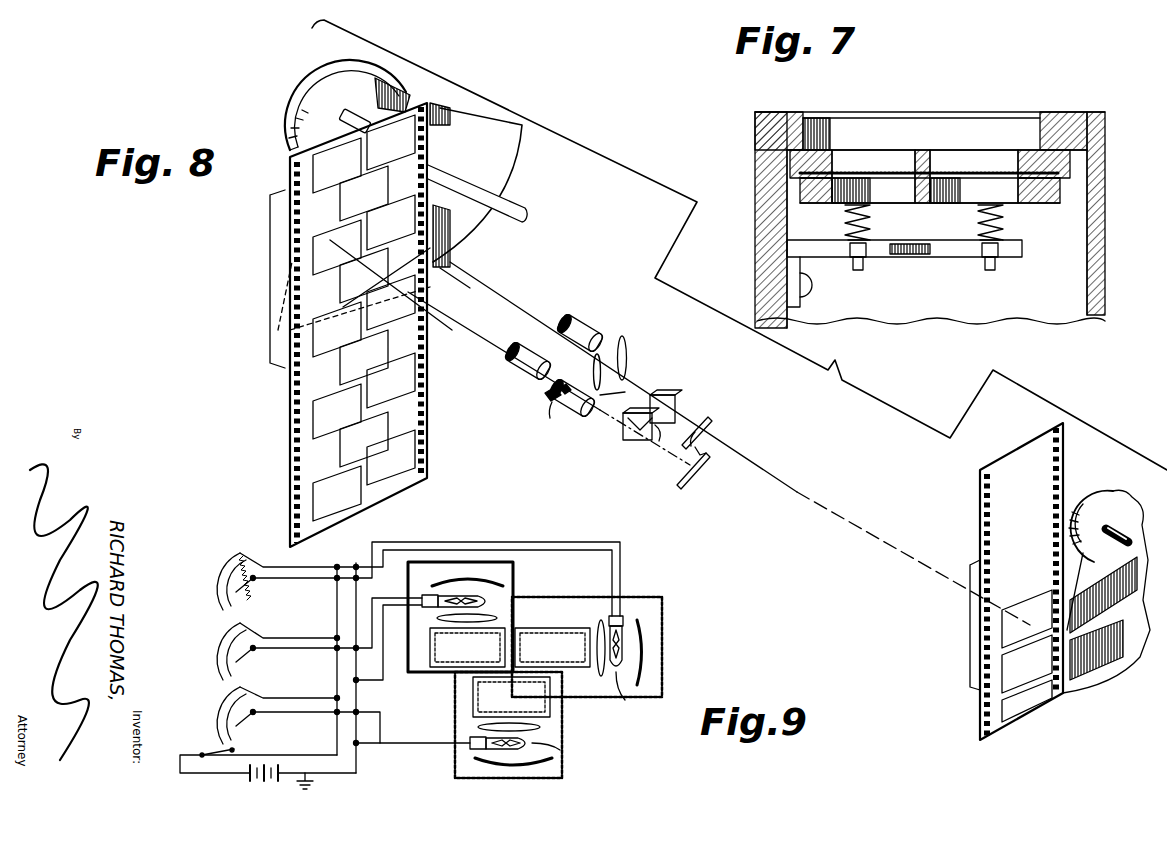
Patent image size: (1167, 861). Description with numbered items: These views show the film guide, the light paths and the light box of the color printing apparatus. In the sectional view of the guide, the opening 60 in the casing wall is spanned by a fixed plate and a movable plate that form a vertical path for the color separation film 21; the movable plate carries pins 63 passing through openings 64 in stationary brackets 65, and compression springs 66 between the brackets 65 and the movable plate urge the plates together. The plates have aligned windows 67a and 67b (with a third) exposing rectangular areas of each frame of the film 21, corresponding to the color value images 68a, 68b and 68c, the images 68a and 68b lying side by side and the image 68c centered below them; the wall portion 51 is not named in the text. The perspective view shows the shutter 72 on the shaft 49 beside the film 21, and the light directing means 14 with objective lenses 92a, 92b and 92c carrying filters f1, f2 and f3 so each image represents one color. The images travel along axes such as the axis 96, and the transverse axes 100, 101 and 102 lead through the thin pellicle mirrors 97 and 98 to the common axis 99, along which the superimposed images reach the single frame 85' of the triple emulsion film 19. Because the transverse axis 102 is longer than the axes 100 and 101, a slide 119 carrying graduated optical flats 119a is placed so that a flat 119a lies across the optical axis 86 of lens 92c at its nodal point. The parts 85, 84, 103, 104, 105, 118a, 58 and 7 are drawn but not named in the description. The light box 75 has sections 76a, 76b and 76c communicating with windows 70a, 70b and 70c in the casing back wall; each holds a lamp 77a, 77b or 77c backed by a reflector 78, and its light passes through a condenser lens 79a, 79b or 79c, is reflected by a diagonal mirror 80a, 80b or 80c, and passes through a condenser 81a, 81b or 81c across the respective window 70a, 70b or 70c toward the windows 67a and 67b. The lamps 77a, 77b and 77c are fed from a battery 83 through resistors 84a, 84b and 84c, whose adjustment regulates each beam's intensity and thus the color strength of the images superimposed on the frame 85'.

In FIG. 7, the housing wall 51 is at (777, 118).
In FIG. 7, the opening 60 is at (834, 129).
In FIG. 7, the window 67b is at (875, 154).
In FIG. 7, the window 67a is at (980, 154).
In FIG. 7, the stationary bracket 65 is at (805, 246).
In FIG. 7, the compression spring 66 is at (871, 234).
In FIG. 7, the pin 63 is at (862, 269).
In FIG. 7, the opening 64 is at (845, 255).
In FIG. 8, the color separation film 21 is at (404, 102).
In FIG. 8, the shutter 72 is at (475, 122).
In FIG. 8, the shaft 49 is at (500, 190).
In FIG. 8, the color value image 68a is at (318, 257).
In FIG. 8, the color value image 68b is at (417, 192).
In FIG. 8, the color value image 68c is at (347, 292).
In FIG. 8, the light beam 85 is at (623, 377).
In FIG. 8, the axis 99 is at (802, 490).
In FIG. 8, the lamp axis 84 is at (486, 335).
In FIG. 8, the optical axis 86 is at (480, 353).
In FIG. 8, the objective lens 92a is at (525, 373).
In FIG. 8, the objective lens 92b is at (590, 328).
In FIG. 8, the objective lens 92c is at (584, 411).
In FIG. 8, the filter f1 is at (510, 356).
In FIG. 8, the filter f2 is at (570, 320).
In FIG. 8, the filter f3 is at (548, 388).
In FIG. 8, the slide 119 is at (548, 402).
In FIG. 8, the optical flat 119a is at (554, 420).
In FIG. 8, the lamp mount 118a is at (572, 410).
In FIG. 8, the transverse axis 100 is at (594, 362).
In FIG. 8, the lens 103 is at (628, 372).
In FIG. 8, the light directing means 14 is at (620, 334).
In FIG. 8, the axis 96 is at (620, 392).
In FIG. 8, the mirror 97 is at (677, 402).
In FIG. 8, the prism 104 is at (630, 442).
In FIG. 8, the transverse axis 101 is at (658, 443).
In FIG. 8, the mirror 98 is at (712, 426).
In FIG. 8, the mirror 105 is at (688, 478).
In FIG. 8, the transverse axis 102 is at (712, 454).
In FIG. 8, the film 19 is at (1016, 468).
In FIG. 8, the frame 85' is at (959, 655).
In FIG. 8, the roller 58 is at (1078, 504).
In FIG. 8, the bracket 7 is at (1134, 588).
In FIG. 9, the resistor 84a is at (225, 567).
In FIG. 9, the resistor 84b is at (225, 637).
In FIG. 9, the resistor 84c is at (225, 704).
In FIG. 9, the battery 83 is at (240, 778).
In FIG. 9, the light box section 76a is at (640, 602).
In FIG. 9, the light box section 76b is at (468, 560).
In FIG. 9, the light box section 76c is at (462, 769).
In FIG. 9, the light box 75 is at (665, 615).
In FIG. 9, the reflector 78 is at (487, 584).
In FIG. 9, the lamp 77a is at (622, 688).
In FIG. 9, the lamp 77b is at (488, 600).
In FIG. 9, the lamp 77c is at (560, 744).
In FIG. 9, the condenser lens 79a is at (606, 677).
In FIG. 9, the condenser lens 79b is at (500, 615).
In FIG. 9, the condenser lens 79c is at (480, 727).
In FIG. 9, the window 70a is at (575, 626).
In FIG. 9, the window 70b is at (432, 640).
In FIG. 9, the window 70c is at (475, 690).
In FIG. 9, the diagonal mirror 80a is at (537, 629).
In FIG. 9, the diagonal mirror 80b is at (432, 660).
In FIG. 9, the mirror 80c is at (475, 700).
In FIG. 9, the condenser lens 81a is at (570, 665).
In FIG. 9, the condenser lens 81b is at (435, 650).
In FIG. 9, the condenser lens 81c is at (555, 725).